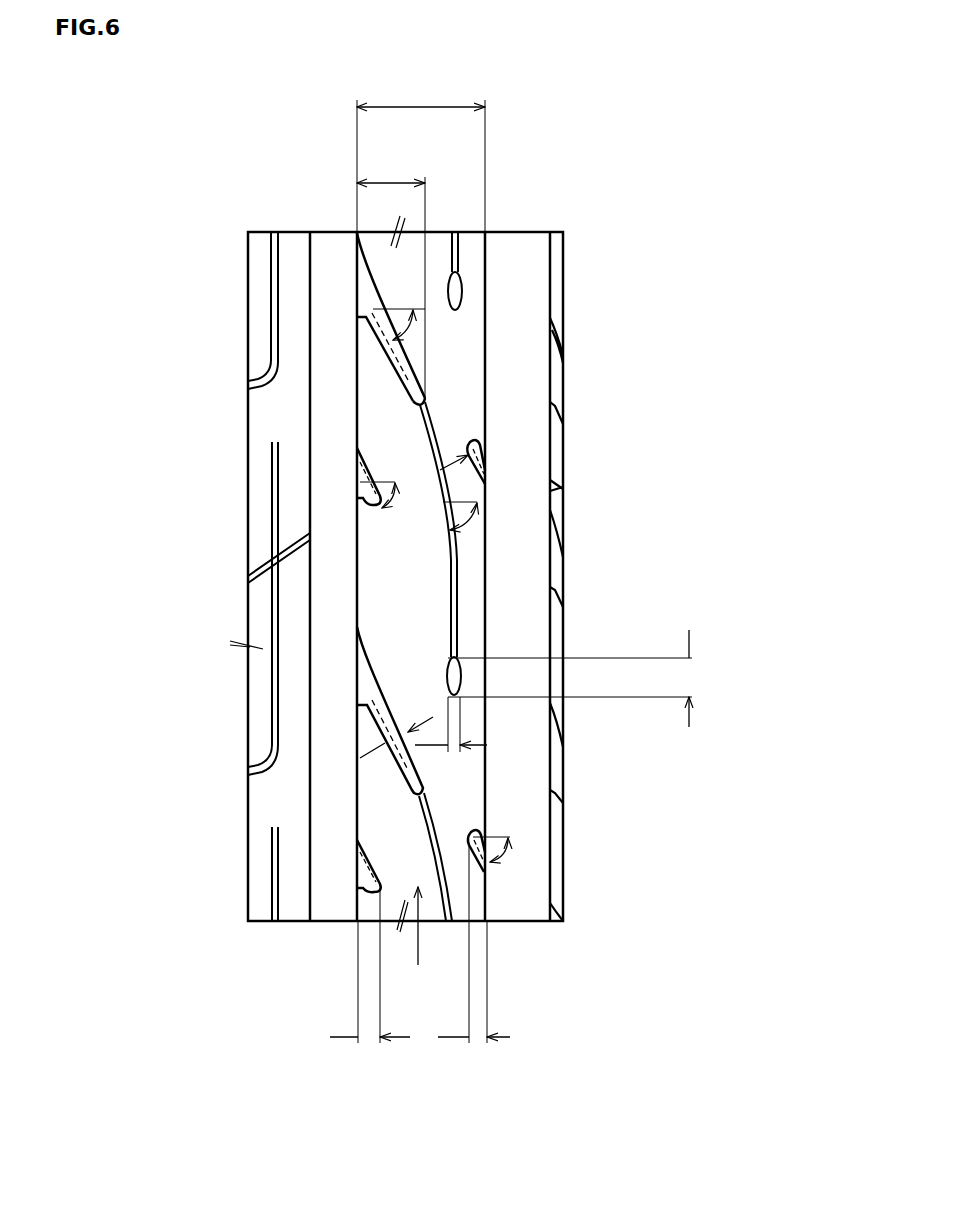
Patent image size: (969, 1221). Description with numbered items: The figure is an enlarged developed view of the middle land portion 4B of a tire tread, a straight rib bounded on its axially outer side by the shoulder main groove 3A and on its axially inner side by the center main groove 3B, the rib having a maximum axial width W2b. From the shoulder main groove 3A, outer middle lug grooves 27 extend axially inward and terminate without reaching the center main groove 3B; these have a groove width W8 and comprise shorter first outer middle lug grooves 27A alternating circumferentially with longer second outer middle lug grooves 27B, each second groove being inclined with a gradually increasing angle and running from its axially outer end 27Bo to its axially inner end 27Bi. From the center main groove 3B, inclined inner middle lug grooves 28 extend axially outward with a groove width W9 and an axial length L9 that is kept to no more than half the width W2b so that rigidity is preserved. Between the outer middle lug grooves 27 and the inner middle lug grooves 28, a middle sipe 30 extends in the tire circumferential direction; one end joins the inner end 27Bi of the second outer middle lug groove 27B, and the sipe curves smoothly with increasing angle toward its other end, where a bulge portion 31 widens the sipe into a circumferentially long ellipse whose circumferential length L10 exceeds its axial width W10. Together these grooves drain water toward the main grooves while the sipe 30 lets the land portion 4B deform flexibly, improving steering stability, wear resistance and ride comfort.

The shoulder main groove 3A is at (333, 265).
The center main groove 3B is at (515, 265).
The middle land portion 4B is at (424, 948).
The outer middle lug groove 27 is at (128, 785).
The first outer middle lug groove 27A is at (357, 483).
The second outer middle lug groove 27B is at (403, 524).
The axially outer end of second outer middle lug groove 27Bo is at (368, 306).
The axially inner end of second outer middle lug groove 27Bi is at (426, 404).
The inner middle lug groove 28 is at (485, 463).
The middle sipe 30 is at (458, 596).
The bulge portion 31 is at (466, 294).
The maximum axial width of middle land portion W2b is at (421, 154).
The axial length of inner middle lug groove L9 is at (474, 960).
The maximum circumferential length of bulge portion L10 is at (594, 678).
The groove width of outer middle lug groove W8 is at (397, 737).
The groove width of inner middle lug groove W9 is at (487, 446).
The maximum axial width of bulge portion W10 is at (455, 752).